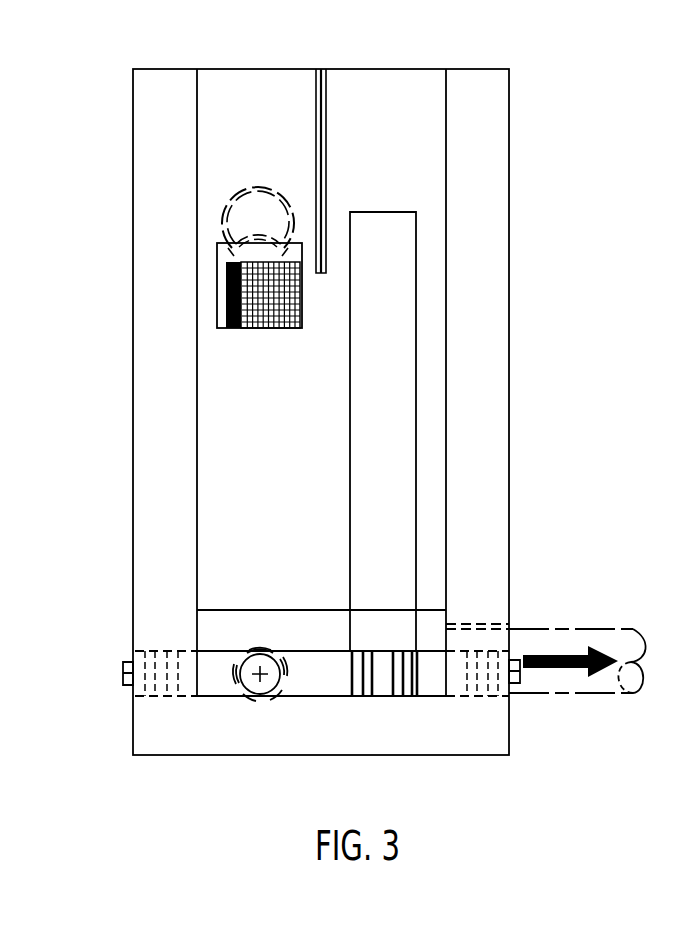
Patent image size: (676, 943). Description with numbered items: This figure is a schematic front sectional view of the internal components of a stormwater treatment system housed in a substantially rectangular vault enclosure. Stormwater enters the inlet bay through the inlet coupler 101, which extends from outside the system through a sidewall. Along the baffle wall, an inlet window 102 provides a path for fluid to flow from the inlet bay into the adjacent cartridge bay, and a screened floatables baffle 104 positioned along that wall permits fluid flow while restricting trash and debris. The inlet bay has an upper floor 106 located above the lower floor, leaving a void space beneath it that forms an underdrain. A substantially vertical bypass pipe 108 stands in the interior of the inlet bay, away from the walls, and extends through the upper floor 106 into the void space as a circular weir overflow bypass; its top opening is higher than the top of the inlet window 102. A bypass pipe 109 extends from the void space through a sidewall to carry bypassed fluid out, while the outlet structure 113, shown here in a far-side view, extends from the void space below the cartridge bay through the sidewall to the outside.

The inlet coupler 101 is at (233, 197).
The inlet window 102 is at (217, 288).
The screened floatables baffle 104 is at (327, 106).
The upper floor 106 is at (292, 609).
The bypass pipe 108 is at (388, 212).
The bypass pipe 109 is at (530, 694).
The outlet structure 113 is at (253, 697).